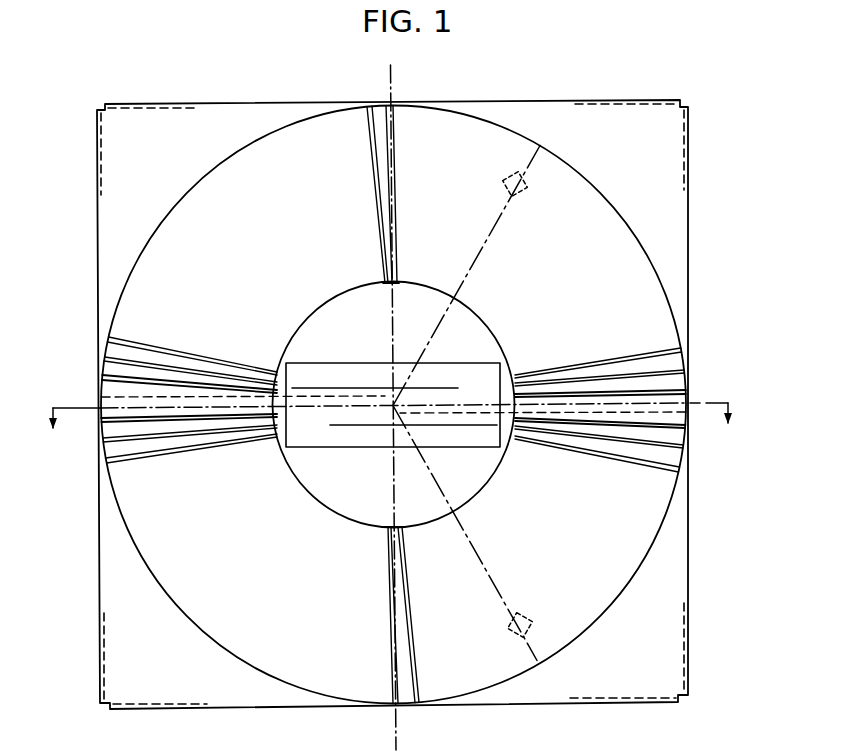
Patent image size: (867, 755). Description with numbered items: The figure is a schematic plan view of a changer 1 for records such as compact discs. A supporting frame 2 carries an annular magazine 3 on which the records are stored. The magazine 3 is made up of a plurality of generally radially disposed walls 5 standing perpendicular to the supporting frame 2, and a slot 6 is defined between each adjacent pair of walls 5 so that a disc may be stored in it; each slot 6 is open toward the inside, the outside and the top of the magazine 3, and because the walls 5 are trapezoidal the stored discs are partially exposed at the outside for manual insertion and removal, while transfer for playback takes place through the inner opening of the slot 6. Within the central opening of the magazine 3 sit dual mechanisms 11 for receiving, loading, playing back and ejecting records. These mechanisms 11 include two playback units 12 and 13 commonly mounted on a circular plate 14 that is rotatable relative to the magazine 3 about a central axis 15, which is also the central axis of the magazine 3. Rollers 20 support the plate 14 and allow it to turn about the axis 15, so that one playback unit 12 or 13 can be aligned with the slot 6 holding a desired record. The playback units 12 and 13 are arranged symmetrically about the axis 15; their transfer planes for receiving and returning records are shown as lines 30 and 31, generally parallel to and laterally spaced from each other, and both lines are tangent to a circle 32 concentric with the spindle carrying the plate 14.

The changer 1 is at (486, 97).
The supporting frame 2 is at (672, 593).
The annular magazine 3 is at (606, 620).
The walls 5 is at (143, 418).
The slot 6 is at (676, 456).
The mechanisms 11 is at (330, 452).
The playback unit 12 is at (334, 385).
The playback unit 13 is at (450, 427).
The circular plate 14 is at (347, 500).
The central axis 15 is at (398, 405).
The rollers 20 is at (530, 190).
The line 30 is at (303, 382).
The line 31 is at (478, 420).
The circle 32 is at (405, 398).